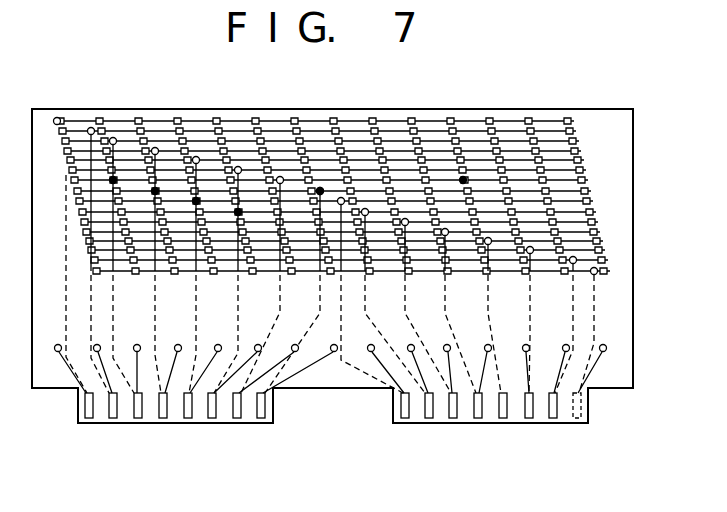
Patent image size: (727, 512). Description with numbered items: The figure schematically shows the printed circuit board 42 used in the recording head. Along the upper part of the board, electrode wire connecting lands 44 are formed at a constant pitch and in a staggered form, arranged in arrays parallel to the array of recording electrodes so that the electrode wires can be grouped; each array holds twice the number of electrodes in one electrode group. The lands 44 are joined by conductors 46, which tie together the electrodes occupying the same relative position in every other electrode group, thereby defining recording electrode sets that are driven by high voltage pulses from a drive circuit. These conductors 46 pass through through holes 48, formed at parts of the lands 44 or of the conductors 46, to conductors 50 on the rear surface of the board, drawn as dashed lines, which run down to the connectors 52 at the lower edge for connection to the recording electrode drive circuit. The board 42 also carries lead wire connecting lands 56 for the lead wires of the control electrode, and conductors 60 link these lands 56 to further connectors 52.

The printed circuit board 42 is at (382, 108).
The electrode wire connecting lands 44 is at (103, 118).
The conductors 46 is at (157, 118).
The through holes 48 is at (59, 118).
The conductors 50 is at (66, 300).
The connectors 52 is at (588, 450).
The lead wire connecting lands 56 is at (605, 344).
The conductors 60 is at (590, 389).